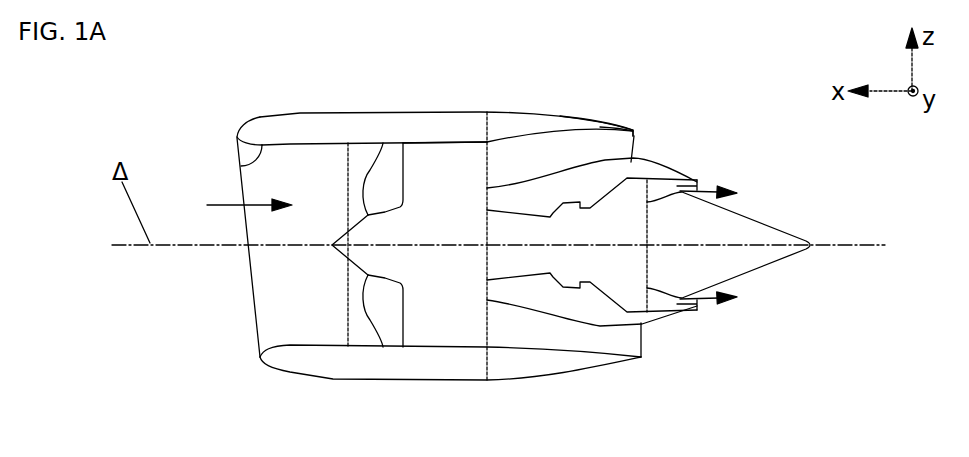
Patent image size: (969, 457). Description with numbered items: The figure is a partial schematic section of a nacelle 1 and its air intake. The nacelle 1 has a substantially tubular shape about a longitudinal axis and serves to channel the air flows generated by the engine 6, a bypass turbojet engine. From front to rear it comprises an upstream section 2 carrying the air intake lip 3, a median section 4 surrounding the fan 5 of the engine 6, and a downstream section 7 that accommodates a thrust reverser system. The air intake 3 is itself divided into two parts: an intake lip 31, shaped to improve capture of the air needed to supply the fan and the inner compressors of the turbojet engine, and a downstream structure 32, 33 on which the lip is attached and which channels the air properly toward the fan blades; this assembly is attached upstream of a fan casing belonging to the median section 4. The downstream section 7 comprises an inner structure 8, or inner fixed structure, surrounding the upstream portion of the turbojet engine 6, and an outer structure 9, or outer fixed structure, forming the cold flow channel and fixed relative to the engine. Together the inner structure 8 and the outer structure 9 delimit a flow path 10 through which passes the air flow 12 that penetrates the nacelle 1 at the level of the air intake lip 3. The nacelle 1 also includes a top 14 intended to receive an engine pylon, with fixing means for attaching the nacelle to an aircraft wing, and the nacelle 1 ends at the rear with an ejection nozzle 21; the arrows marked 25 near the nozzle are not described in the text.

The nacelle 1 is at (658, 92).
The upstream section 2 is at (291, 118).
The air intake lip 3 is at (206, 110).
The median section 4 is at (460, 115).
The fan 5 is at (443, 350).
The engine 6 is at (632, 193).
The downstream section 7 is at (573, 100).
The inner structure 8 is at (636, 147).
The outer structure 9 is at (597, 127).
The flow path 10 is at (497, 160).
The air flow 12 is at (235, 204).
The top 14 is at (475, 111).
The ejection nozzle 21 is at (790, 205).
The primary nozzle outlet 25 is at (707, 187).
The intake lip 31 is at (236, 136).
The downstream structure 32 is at (243, 158).
The downstream structure 33 is at (246, 126).